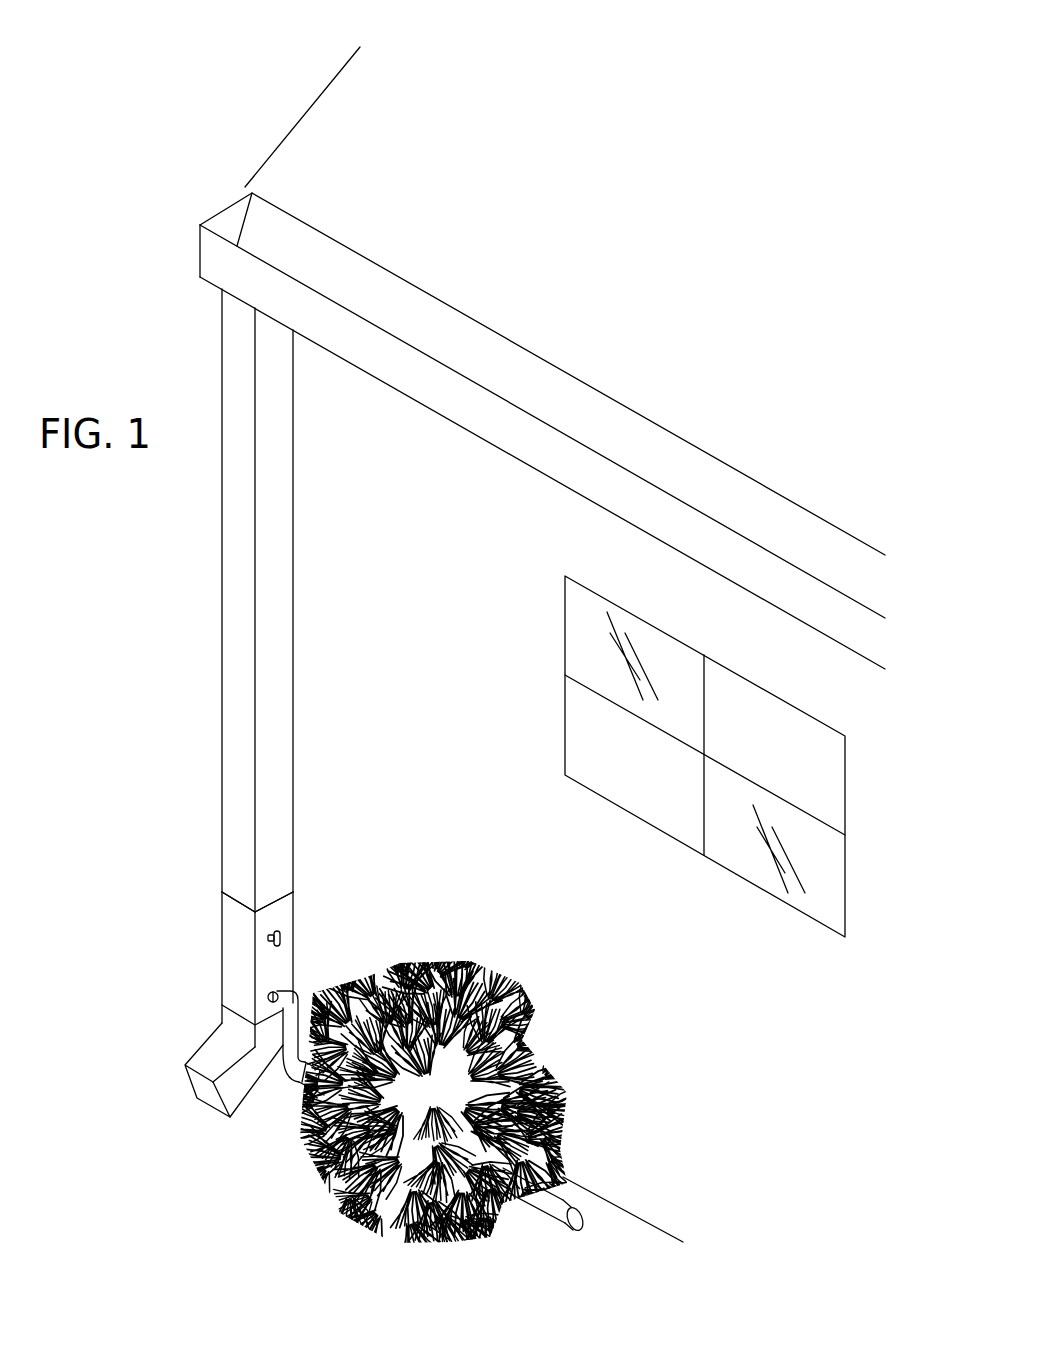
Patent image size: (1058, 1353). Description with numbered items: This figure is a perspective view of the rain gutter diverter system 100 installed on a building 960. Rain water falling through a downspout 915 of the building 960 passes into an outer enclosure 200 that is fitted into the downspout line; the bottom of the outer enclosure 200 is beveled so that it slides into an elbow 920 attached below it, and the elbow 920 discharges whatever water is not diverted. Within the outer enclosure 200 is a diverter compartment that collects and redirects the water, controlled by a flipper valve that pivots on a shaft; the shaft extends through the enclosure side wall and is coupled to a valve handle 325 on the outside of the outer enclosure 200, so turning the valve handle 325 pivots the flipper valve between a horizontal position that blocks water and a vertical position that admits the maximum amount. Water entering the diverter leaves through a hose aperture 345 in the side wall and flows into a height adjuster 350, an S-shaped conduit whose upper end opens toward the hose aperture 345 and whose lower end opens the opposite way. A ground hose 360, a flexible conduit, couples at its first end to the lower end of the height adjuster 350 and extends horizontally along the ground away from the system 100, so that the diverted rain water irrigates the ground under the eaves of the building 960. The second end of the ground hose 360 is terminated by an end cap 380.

The rain gutter diverter system 100 is at (188, 892).
The outer enclosure 200 is at (237, 951).
The valve handle 325 is at (283, 934).
The hose aperture 345 is at (277, 991).
The height adjuster 350 is at (290, 1033).
The ground hose 360 is at (560, 1200).
The end cap 380 is at (586, 1214).
The downspout 915 is at (235, 636).
The elbow 920 is at (213, 1048).
The building 960 is at (337, 568).